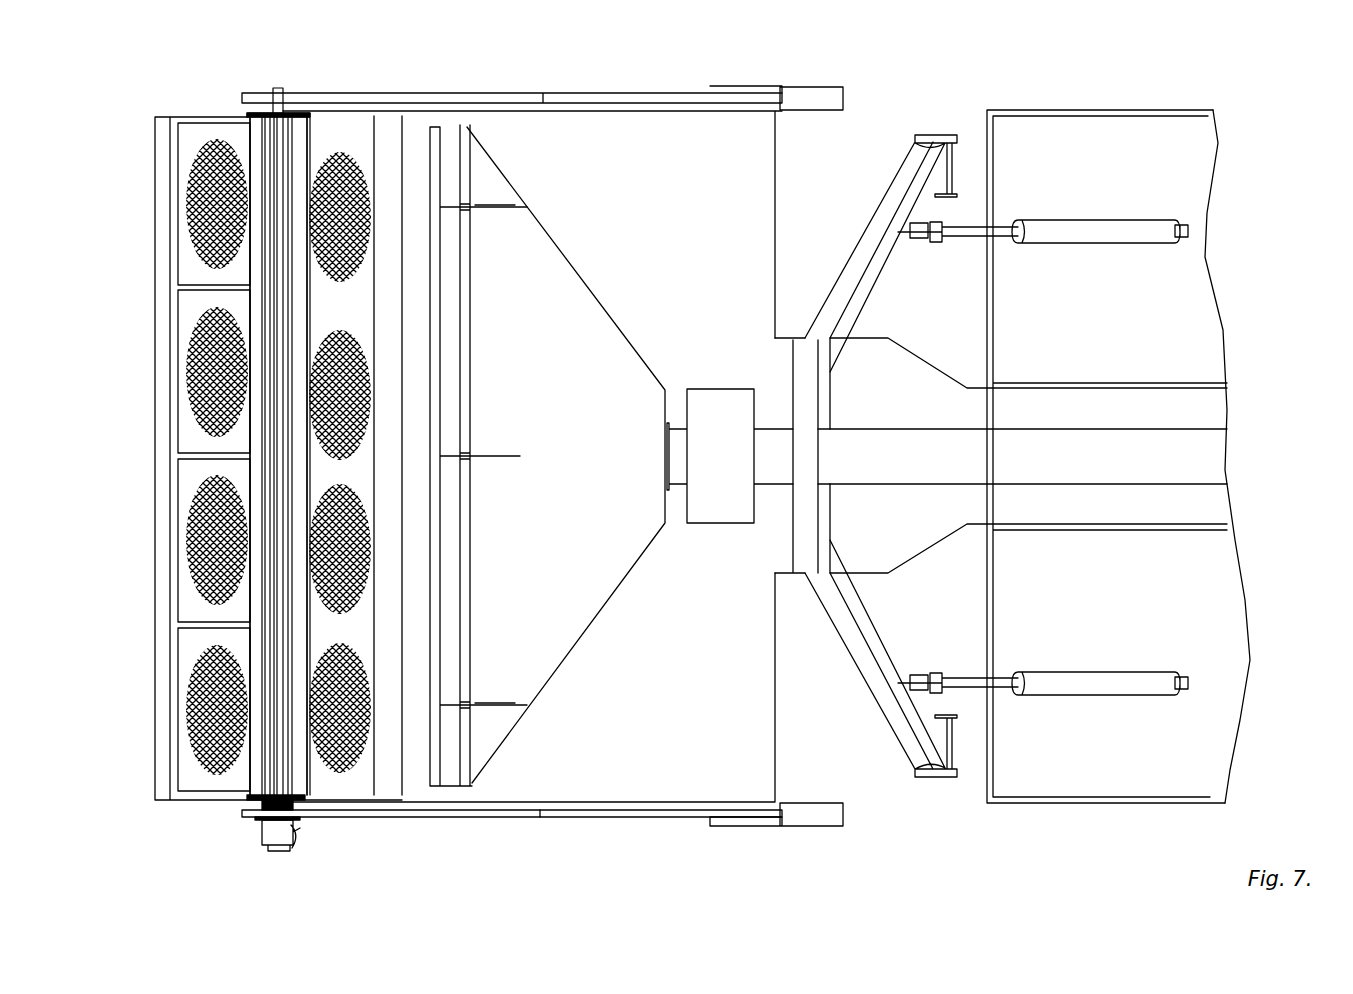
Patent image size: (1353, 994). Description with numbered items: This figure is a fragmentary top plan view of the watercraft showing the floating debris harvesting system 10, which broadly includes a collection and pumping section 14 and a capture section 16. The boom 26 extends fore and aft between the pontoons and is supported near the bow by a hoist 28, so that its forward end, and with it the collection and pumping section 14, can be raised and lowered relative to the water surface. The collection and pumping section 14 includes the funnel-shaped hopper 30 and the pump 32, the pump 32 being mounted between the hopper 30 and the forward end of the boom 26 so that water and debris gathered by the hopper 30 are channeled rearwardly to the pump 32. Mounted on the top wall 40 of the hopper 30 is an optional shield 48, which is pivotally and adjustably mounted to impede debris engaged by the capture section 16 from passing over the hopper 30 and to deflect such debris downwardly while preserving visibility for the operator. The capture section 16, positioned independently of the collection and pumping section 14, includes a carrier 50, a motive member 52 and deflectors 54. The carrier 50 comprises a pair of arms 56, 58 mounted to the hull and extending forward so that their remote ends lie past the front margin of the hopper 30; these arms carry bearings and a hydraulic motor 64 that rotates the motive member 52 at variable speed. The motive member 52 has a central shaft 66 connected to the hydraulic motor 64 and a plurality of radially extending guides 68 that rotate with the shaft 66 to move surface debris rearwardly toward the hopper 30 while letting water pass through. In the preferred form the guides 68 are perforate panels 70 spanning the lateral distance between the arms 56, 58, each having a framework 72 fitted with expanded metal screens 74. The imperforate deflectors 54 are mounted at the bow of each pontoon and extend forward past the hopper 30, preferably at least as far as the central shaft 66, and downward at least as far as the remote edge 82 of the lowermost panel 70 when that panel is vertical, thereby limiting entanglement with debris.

The floating debris harvesting system 10 is at (654, 476).
The collection and pumping section 14 is at (746, 464).
The capture section 16 is at (285, 466).
The boom 26 is at (905, 440).
The hoist 28 is at (875, 233).
The hopper 30 is at (568, 280).
The pump 32 is at (735, 398).
The top wall 40 is at (528, 481).
The shield 48 is at (452, 615).
The carrier 50 is at (470, 817).
The motive member 52 is at (235, 797).
The deflectors 54 is at (612, 111).
The arm 56 is at (530, 95).
The arm 58 is at (600, 817).
The hydraulic motor 64 is at (265, 833).
The central shaft 66 is at (268, 770).
The guides 68 is at (200, 600).
The perforate panels 70 is at (345, 133).
The framework 72 is at (192, 628).
The expanded metal screens 74 is at (192, 680).
The remote edge 82 is at (160, 275).